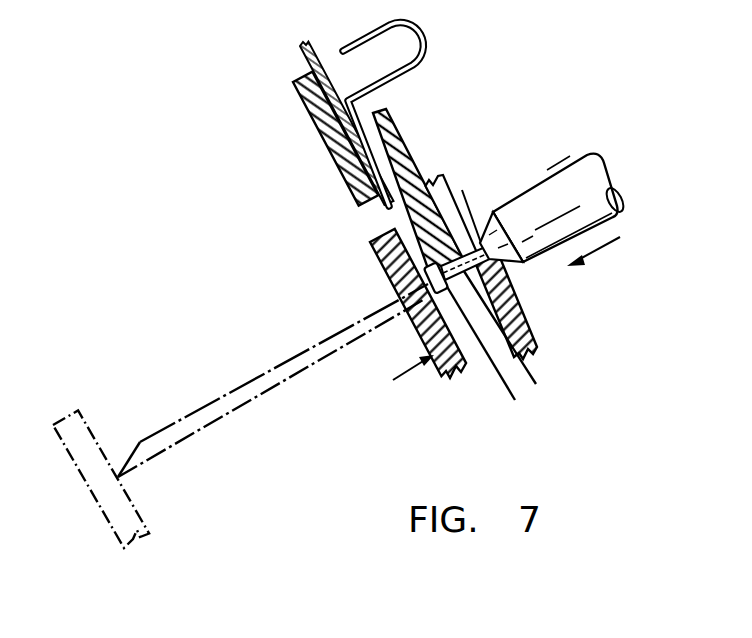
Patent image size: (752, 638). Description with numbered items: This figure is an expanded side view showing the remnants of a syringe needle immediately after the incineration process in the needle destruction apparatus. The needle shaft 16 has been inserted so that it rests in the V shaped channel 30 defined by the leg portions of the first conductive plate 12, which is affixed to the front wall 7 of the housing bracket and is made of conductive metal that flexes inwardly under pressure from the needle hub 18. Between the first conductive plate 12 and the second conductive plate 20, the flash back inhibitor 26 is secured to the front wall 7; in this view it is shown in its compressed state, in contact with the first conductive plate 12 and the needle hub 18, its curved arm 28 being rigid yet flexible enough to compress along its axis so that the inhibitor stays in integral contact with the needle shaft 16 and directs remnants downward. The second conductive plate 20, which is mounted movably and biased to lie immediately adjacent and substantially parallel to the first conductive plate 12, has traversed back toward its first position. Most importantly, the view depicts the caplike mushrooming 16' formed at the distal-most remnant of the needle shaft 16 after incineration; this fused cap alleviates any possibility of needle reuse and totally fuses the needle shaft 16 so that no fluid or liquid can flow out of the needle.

The front wall 7 is at (321, 127).
The first conductive plate 12 is at (545, 320).
The needle shaft 16 is at (343, 381).
The caplike mushrooming 16' is at (492, 358).
The needle hub 18 is at (510, 240).
The second conductive plate 20 is at (116, 522).
The flash back inhibitor 26 is at (413, 180).
The curved arm 28 is at (429, 42).
The V shaped channel 30 is at (463, 227).